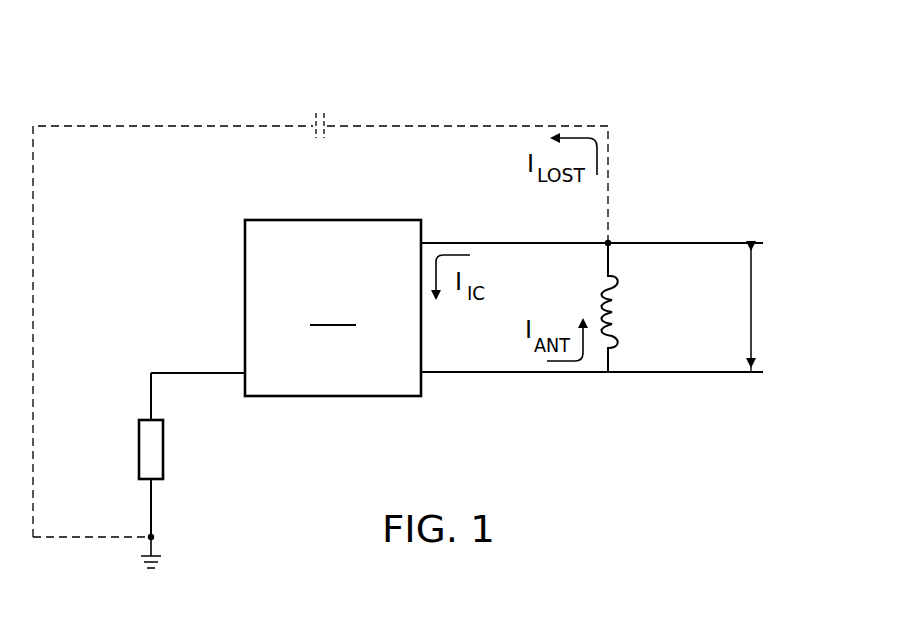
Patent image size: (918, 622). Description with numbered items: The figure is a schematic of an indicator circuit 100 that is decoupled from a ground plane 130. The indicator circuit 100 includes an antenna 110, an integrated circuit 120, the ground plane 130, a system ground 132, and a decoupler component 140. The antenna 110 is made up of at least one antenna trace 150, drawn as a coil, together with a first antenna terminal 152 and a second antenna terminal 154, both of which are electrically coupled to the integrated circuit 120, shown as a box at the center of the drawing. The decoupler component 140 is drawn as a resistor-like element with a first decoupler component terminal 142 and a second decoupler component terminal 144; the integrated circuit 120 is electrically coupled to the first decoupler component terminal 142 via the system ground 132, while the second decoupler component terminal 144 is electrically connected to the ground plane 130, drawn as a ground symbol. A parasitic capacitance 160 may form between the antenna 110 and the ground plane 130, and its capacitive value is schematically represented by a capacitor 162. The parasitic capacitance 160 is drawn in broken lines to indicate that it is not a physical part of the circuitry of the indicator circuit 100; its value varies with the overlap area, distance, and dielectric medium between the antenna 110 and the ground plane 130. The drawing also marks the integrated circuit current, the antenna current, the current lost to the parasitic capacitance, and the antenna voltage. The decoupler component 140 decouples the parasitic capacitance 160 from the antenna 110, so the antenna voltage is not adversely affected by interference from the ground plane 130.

The indicator circuit 100 is at (592, 80).
The antenna 110 is at (650, 298).
The integrated circuit 120 is at (333, 308).
The ground plane 130 is at (140, 561).
The system ground 132 is at (200, 372).
The decoupler component 140 is at (139, 450).
The first decoupler component terminal 142 is at (148, 418).
The second decoupler component terminal 144 is at (153, 482).
The antenna trace 150 is at (515, 374).
The first antenna terminal 152 is at (423, 243).
The second antenna terminal 154 is at (423, 376).
The parasitic capacitance 160 is at (318, 98).
The capacitor 162 is at (320, 140).